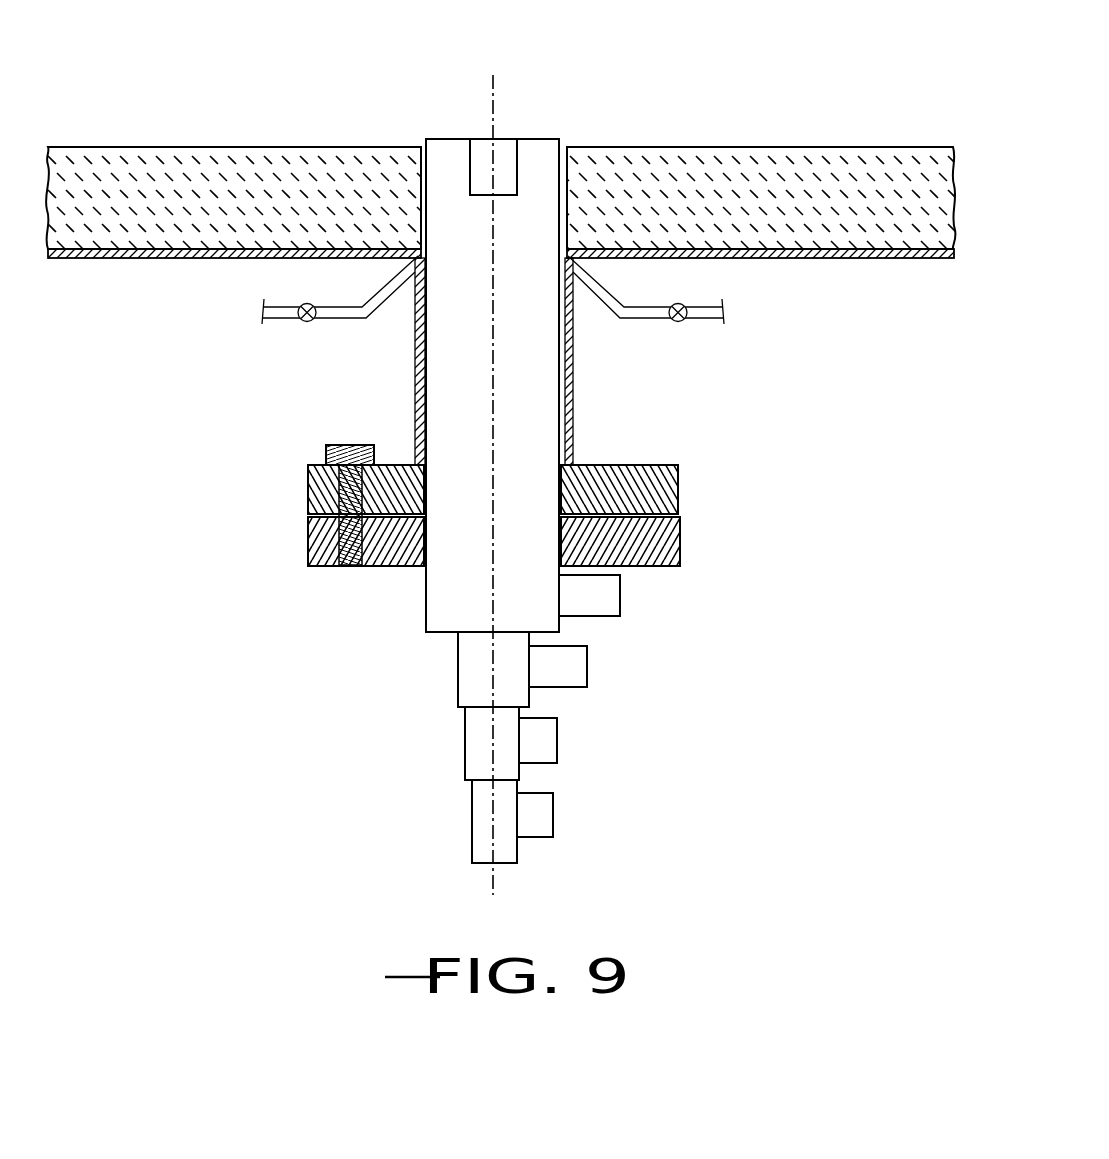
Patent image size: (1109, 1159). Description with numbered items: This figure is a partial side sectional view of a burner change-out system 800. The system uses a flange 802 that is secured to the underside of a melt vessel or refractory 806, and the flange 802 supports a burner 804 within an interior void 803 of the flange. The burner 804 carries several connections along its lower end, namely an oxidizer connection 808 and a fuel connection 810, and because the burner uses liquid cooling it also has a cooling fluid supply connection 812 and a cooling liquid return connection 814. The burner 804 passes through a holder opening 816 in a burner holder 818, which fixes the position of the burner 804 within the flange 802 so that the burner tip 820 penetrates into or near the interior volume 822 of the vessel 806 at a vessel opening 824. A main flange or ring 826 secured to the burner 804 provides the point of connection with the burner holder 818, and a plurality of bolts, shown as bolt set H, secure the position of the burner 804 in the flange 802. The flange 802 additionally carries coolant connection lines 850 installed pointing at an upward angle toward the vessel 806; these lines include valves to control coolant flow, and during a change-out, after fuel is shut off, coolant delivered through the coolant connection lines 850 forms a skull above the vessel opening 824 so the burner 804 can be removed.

The burner change-out system 800 is at (796, 440).
The flange 802 is at (572, 392).
The interior void 803 is at (553, 358).
The burner 804 is at (533, 428).
The melt vessel or refractory 806 is at (668, 170).
The oxidizer connection 808 is at (620, 592).
The fuel connection 810 is at (587, 660).
The cooling fluid supply connection 812 is at (557, 740).
The cooling liquid return connection 814 is at (553, 818).
The holder opening 816 is at (432, 480).
The burner holder 818 is at (627, 482).
The burner tip 820 is at (526, 136).
The interior volume 822 is at (343, 80).
The vessel opening 824 is at (562, 177).
The main flange or ring 826 is at (682, 535).
The coolant connection lines 850 is at (387, 292).
The bolt set H is at (343, 432).